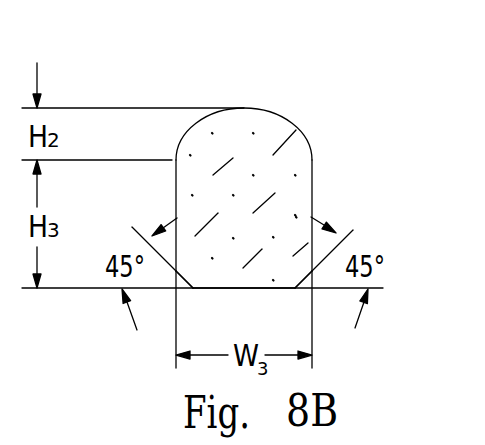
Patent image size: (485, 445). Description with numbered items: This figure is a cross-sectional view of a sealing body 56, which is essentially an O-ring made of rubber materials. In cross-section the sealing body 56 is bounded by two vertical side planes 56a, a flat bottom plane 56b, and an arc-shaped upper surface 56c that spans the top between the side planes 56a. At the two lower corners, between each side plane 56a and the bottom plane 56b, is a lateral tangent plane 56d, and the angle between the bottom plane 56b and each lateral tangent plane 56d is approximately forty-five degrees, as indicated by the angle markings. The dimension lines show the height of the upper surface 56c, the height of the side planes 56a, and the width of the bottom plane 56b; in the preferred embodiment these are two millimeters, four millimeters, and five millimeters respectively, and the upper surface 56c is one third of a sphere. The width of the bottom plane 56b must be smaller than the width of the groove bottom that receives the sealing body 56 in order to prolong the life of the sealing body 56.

The sealing body 56 is at (242, 184).
The side plane 56a is at (176, 183).
The bottom plane 56b is at (220, 289).
The arc-shaped upper surface 56c is at (297, 130).
The lateral tangent plane 56d is at (177, 289).